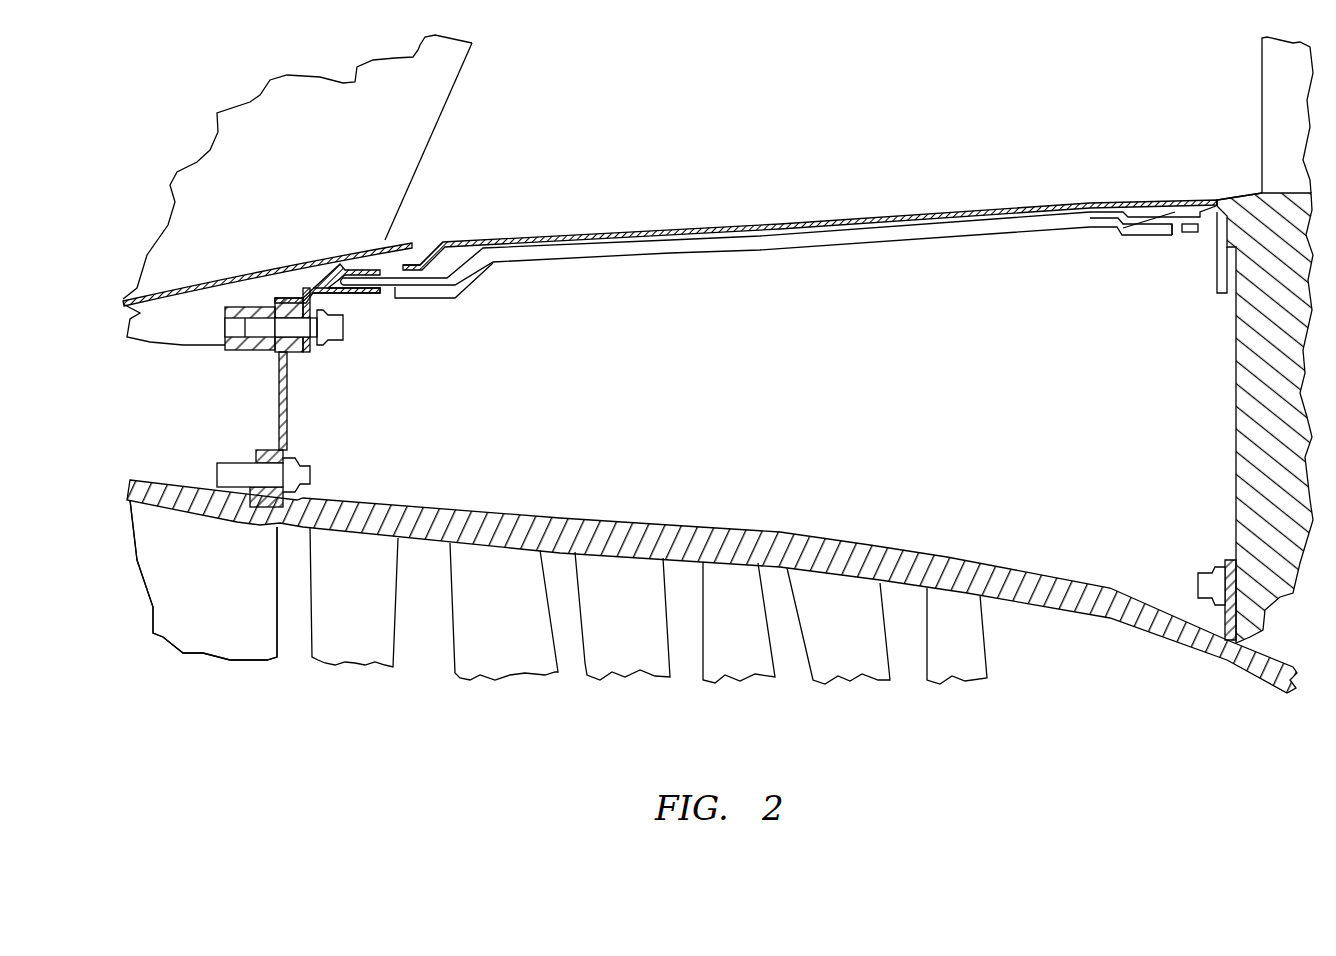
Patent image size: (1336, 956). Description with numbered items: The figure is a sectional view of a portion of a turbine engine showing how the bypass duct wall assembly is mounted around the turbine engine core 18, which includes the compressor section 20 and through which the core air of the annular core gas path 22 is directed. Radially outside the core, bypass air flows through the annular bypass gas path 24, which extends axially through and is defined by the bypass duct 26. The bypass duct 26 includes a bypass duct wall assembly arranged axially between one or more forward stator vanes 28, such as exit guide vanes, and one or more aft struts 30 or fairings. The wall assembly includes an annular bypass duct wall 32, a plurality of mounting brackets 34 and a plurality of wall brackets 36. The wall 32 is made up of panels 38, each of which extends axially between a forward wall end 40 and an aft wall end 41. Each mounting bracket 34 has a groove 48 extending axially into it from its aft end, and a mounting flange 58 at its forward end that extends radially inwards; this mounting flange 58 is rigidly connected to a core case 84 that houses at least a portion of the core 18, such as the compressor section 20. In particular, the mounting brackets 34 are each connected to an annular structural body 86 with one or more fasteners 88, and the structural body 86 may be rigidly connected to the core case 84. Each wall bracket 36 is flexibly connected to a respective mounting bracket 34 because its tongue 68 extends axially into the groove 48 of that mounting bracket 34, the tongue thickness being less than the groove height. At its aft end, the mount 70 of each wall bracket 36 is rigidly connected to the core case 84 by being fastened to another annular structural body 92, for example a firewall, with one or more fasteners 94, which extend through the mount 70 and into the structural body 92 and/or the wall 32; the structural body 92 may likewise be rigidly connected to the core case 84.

The turbine engine core 18 is at (198, 674).
The compressor section 20 is at (203, 580).
The annular core gas path 22 is at (1066, 665).
The annular bypass gas path 24 is at (797, 120).
The bypass duct 26 is at (1096, 187).
The forward stator vanes 28 is at (440, 118).
The aft struts 30 is at (1262, 66).
The annular bypass duct wall 32 is at (910, 210).
The mounting brackets 34 is at (350, 296).
The wall brackets 36 is at (765, 254).
The panels 38 is at (598, 235).
The forward wall end 40 is at (400, 263).
The aft wall end 41 is at (1225, 198).
The groove 48 is at (345, 268).
The mounting flange 58 is at (298, 352).
The tongue 68 is at (395, 292).
The mount 70 is at (1175, 214).
The core case 84 is at (383, 509).
The annular structural body 86 is at (279, 405).
The fasteners 88 is at (235, 330).
The annular structural body 92 is at (1236, 343).
The fasteners 94 is at (1190, 233).